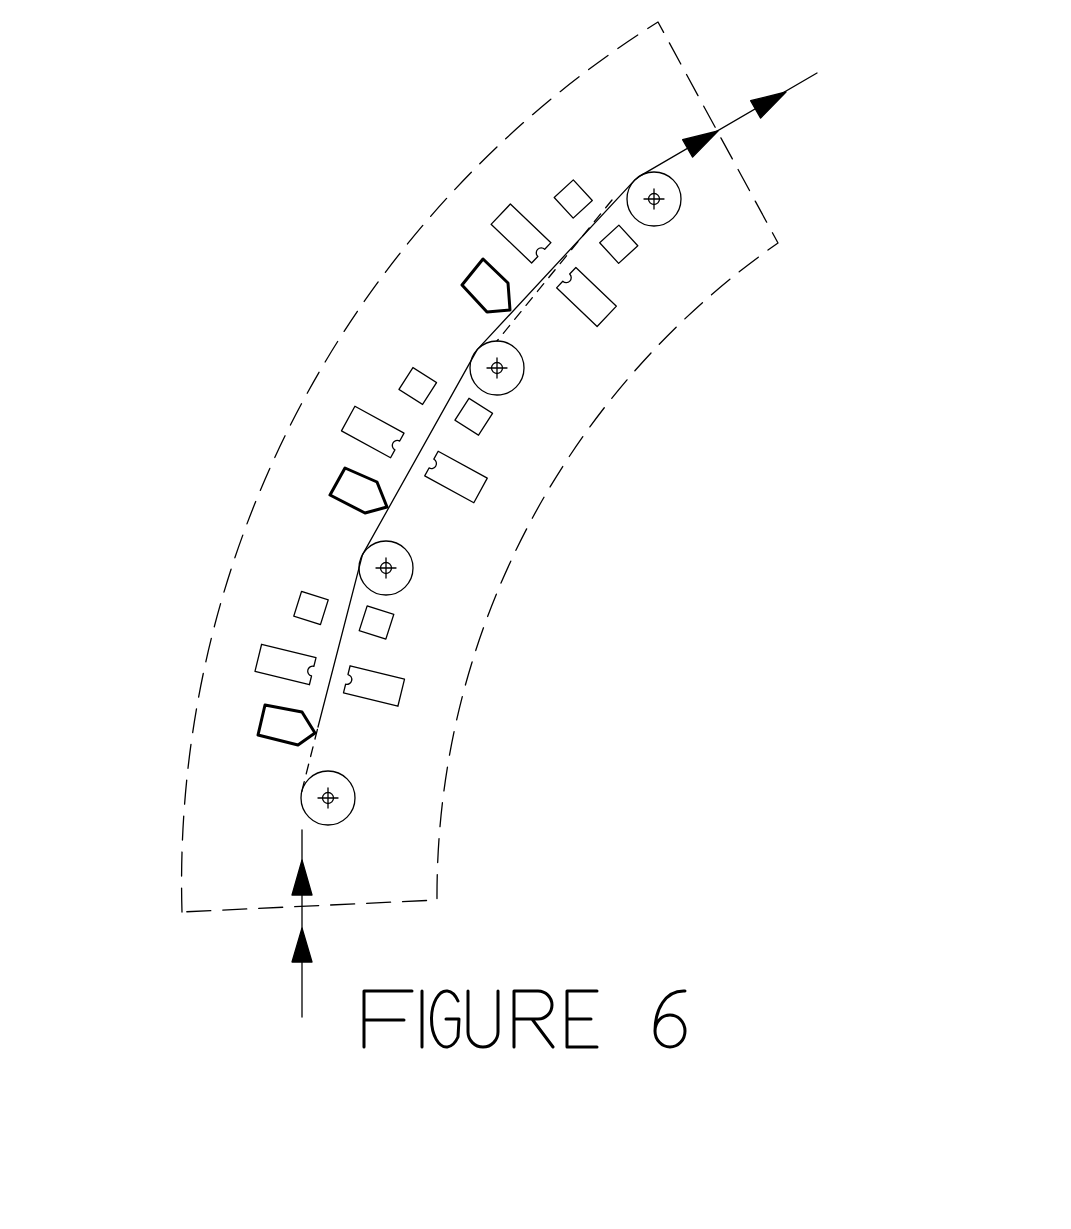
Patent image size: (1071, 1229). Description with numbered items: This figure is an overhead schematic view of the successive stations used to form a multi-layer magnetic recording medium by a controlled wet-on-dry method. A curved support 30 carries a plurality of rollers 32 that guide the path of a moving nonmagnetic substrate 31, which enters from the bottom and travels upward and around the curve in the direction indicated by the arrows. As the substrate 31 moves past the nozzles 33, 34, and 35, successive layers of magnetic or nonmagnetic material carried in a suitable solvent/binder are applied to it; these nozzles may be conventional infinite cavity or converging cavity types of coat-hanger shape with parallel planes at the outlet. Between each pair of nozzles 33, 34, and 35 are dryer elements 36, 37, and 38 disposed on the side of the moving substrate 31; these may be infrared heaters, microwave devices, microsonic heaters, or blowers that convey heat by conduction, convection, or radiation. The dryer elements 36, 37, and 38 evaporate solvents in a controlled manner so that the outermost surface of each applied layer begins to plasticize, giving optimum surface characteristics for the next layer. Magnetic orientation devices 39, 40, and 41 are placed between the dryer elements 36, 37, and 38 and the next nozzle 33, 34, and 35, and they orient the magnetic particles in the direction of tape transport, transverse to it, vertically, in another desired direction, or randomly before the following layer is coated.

The curved support 30 is at (480, 465).
The nonmagnetic substrate 31 is at (437, 545).
The roller 32 is at (589, 529).
The nozzle 33 is at (176, 673).
The nozzle 34 is at (247, 444).
The nozzle 35 is at (374, 236).
The dryer element 36 is at (475, 728).
The dryer element 37 is at (565, 515).
The dryer element 38 is at (679, 322).
The magnetic orientation device 39 is at (525, 671).
The magnetic orientation device 40 is at (583, 450).
The magnetic orientation device 41 is at (724, 276).